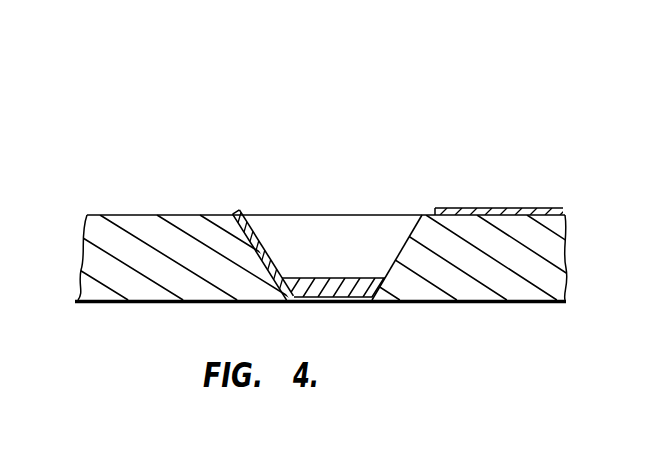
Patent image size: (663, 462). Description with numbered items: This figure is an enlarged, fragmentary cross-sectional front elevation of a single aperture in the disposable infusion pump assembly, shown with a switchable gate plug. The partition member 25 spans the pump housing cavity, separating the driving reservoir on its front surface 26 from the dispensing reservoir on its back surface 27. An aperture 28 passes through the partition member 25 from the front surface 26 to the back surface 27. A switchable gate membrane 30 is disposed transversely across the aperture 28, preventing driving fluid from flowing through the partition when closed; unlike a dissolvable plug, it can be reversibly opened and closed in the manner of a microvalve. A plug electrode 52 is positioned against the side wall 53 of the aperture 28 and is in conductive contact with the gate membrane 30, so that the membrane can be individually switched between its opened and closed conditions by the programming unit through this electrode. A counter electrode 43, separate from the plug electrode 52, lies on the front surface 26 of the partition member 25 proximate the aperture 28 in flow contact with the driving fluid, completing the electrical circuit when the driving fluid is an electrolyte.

The partition member 25 is at (122, 255).
The front surface 26 is at (125, 214).
The back surface 27 is at (134, 302).
The aperture 28 is at (403, 246).
The switchable gate membrane 30 is at (361, 278).
The counter electrode 43 is at (533, 207).
The plug electrode 52 is at (268, 254).
The side wall 53 is at (253, 228).